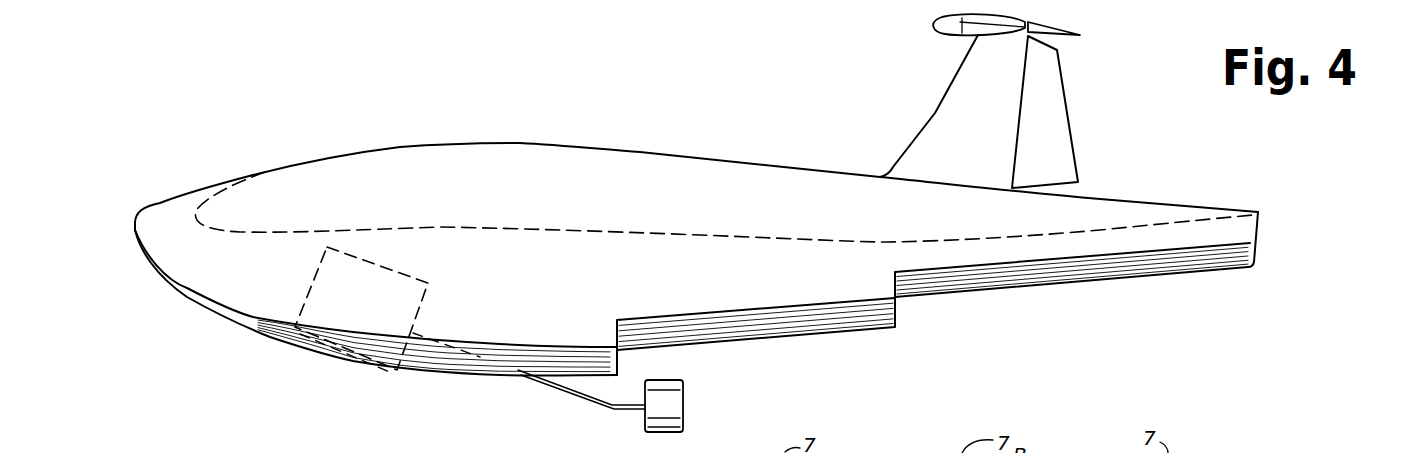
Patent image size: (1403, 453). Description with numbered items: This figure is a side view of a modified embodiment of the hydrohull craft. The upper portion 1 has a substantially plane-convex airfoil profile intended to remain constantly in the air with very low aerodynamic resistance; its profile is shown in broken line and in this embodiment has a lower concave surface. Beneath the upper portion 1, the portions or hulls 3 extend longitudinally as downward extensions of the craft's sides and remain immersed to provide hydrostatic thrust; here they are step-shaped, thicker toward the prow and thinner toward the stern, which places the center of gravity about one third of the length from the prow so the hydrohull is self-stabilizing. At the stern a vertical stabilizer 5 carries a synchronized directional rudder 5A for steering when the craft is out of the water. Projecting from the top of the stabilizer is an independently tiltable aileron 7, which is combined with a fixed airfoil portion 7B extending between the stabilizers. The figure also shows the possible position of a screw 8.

The upper portion 1 is at (595, 167).
The portions or hulls 3 is at (570, 330).
The vertical stabilizer 5 is at (948, 110).
The directional rudder 5A is at (1067, 153).
The aileron 7 is at (1063, 27).
The fixed airfoil portion 7B is at (960, 32).
The screw 8 is at (683, 418).